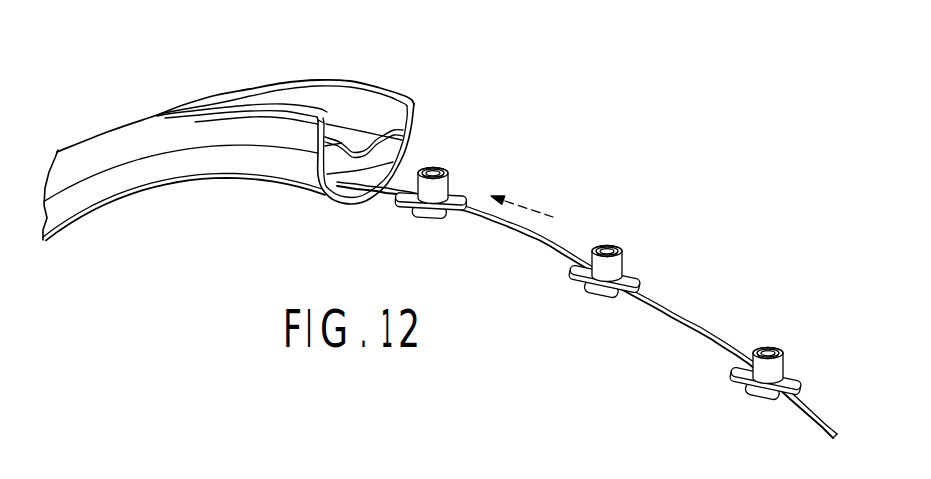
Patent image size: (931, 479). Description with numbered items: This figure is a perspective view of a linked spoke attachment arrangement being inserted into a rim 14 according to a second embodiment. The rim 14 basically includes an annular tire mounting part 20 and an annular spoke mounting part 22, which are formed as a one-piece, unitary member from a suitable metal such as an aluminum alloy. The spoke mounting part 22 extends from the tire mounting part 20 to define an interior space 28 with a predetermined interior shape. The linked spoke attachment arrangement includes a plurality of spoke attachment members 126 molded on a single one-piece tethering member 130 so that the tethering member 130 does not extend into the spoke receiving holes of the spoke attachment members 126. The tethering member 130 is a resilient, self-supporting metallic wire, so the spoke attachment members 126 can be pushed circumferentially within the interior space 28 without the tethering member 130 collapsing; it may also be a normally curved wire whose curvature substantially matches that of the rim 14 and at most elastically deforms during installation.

The rim 14 is at (190, 84).
The annular tire mounting part 20 is at (303, 78).
The annular spoke mounting part 22 is at (227, 175).
The interior space 28 is at (390, 151).
The spoke attachment member 126 is at (455, 171).
The tethering member 130 is at (517, 241).